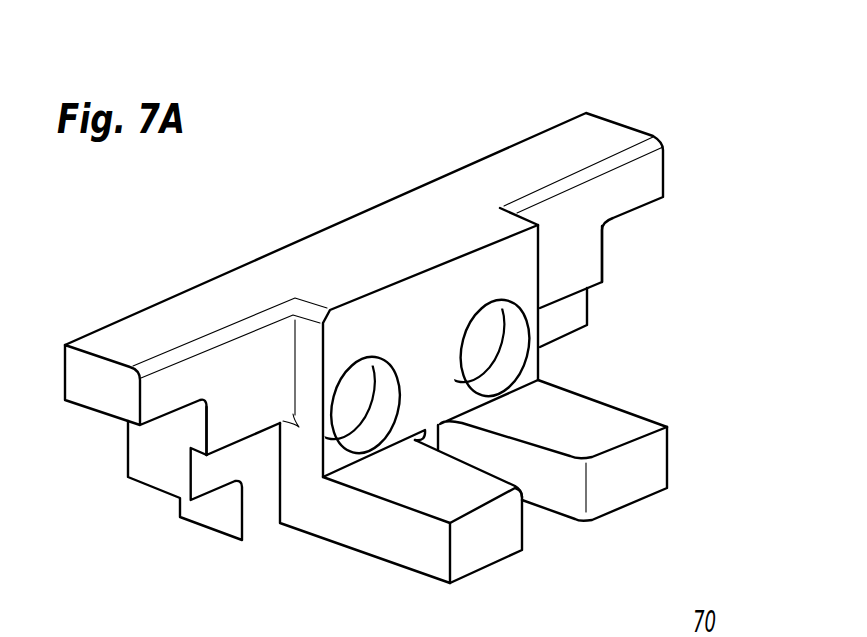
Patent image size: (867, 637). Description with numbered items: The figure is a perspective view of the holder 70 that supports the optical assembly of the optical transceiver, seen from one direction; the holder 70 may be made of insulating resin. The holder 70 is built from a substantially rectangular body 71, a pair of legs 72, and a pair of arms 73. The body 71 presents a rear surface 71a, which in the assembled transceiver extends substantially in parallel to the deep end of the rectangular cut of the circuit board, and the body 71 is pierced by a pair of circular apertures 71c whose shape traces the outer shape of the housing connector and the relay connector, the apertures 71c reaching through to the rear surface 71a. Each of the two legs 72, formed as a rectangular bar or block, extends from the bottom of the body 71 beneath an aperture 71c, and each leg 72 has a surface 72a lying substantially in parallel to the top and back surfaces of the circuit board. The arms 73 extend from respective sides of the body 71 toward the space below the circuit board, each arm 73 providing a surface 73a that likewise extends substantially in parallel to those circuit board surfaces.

The holder 70 is at (630, 81).
The body 71 is at (335, 255).
The rear surface 71a is at (437, 290).
The apertures 71c is at (515, 358).
The legs 72 is at (625, 497).
The surface 72a is at (613, 420).
The arms 73 is at (548, 152).
The surface 73a is at (642, 209).